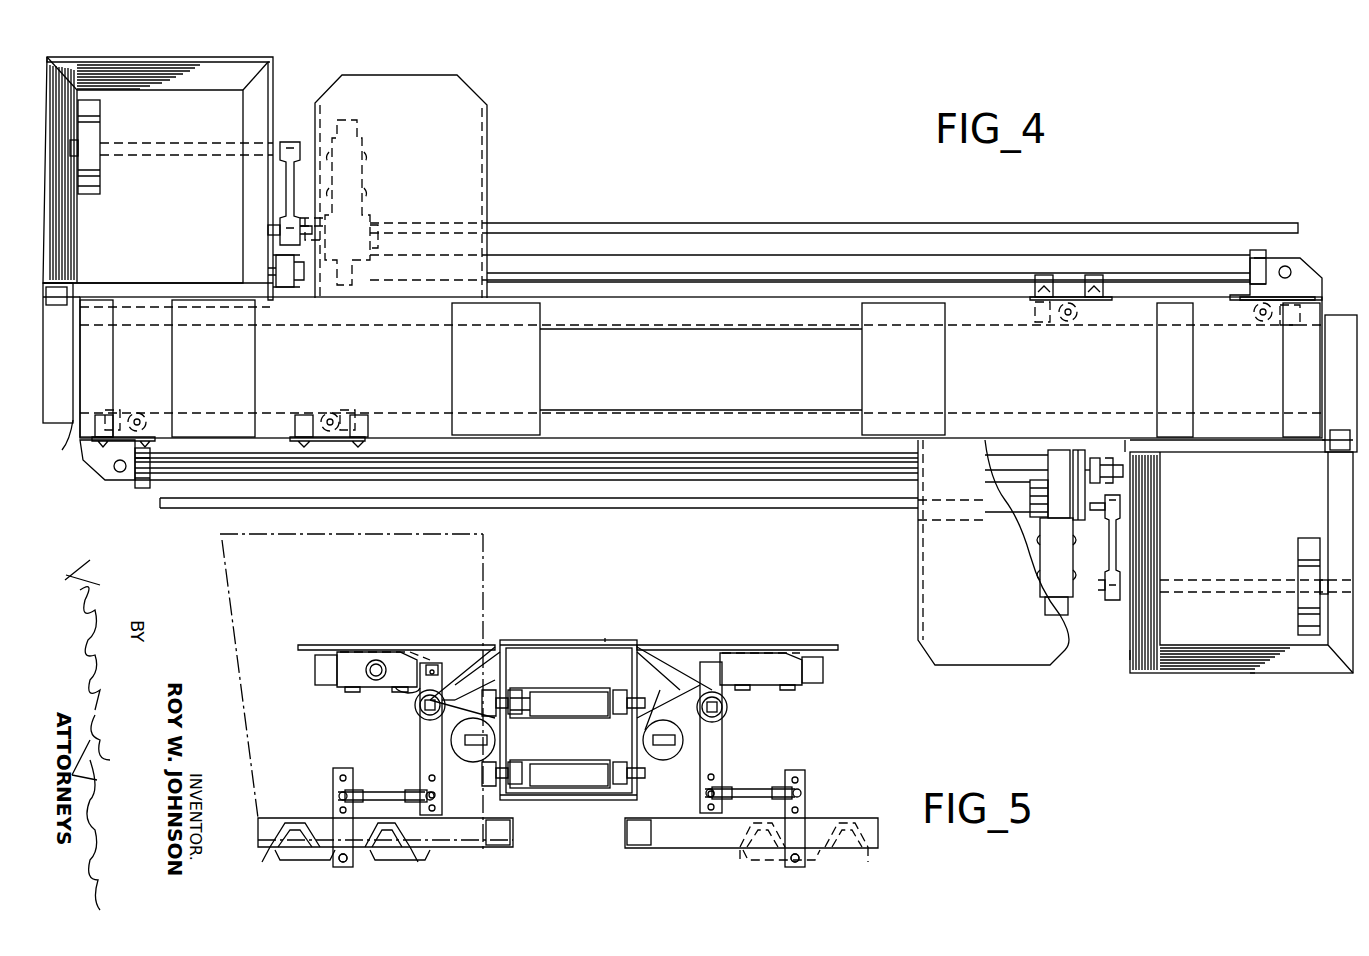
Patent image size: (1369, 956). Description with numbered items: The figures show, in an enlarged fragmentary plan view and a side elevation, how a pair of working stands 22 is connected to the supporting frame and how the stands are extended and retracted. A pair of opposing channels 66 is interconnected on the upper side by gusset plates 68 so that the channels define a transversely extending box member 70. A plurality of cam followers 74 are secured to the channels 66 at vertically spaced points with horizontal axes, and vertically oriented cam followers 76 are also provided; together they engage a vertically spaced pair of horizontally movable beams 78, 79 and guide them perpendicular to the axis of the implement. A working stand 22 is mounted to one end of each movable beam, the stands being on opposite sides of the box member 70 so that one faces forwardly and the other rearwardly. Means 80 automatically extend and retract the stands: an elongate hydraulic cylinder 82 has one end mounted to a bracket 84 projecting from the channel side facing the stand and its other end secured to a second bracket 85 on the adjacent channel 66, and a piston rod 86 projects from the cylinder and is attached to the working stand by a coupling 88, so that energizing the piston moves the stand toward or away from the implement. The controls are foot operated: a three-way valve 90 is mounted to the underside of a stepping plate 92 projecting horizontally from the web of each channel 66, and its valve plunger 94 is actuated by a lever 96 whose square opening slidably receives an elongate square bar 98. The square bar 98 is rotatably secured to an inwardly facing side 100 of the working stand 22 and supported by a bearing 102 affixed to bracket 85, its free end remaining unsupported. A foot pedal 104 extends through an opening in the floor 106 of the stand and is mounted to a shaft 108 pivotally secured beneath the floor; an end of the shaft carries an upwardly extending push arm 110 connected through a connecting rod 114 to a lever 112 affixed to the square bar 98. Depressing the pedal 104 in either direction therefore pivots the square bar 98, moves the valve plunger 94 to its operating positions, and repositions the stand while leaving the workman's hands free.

In FIG. 4, the working stand 22 is at (275, 66).
In FIG. 5, the working stand 22 is at (240, 635).
In FIG. 4, the channels 66 is at (676, 410).
In FIG. 5, the channels 66 is at (490, 655).
In FIG. 4, the gusset plates 68 is at (512, 374).
In FIG. 5, the gusset plates 68 is at (562, 640).
In FIG. 4, the box member 70 is at (736, 438).
In FIG. 5, the box member 70 is at (606, 640).
In FIG. 4, the cam followers 74 is at (352, 412).
In FIG. 5, the cam followers 74 is at (515, 700).
In FIG. 4, the cam followers 76 is at (330, 412).
In FIG. 4, the movable beam 78 is at (1325, 320).
In FIG. 5, the movable beam 78 is at (583, 690).
In FIG. 4, the movable beam 79 is at (84, 438).
In FIG. 5, the movable beam 79 is at (562, 760).
In FIG. 4, the means for extending and retracting the working stands 80 is at (615, 195).
In FIG. 4, the hydraulic cylinder 82 is at (972, 258).
In FIG. 5, the hydraulic cylinder 82 is at (463, 755).
In FIG. 4, the bracket 84 is at (1300, 266).
In FIG. 4, the second bracket 85 is at (1048, 450).
In FIG. 4, the piston rod 86 is at (1078, 450).
In FIG. 4, the coupling 88 is at (1112, 458).
In FIG. 4, the three-way valve 90 is at (362, 176).
In FIG. 5, the three-way valve 90 is at (340, 667).
In FIG. 4, the stepping plate 92 is at (470, 183).
In FIG. 5, the stepping plate 92 is at (380, 645).
In FIG. 5, the valve plunger 94 is at (412, 692).
In FIG. 5, the lever 96 is at (438, 676).
In FIG. 4, the square bar 98 is at (778, 223).
In FIG. 5, the square bar 98 is at (428, 722).
In FIG. 4, the inwardly facing side 100 is at (275, 116).
In FIG. 4, the bearing 102 is at (1072, 520).
In FIG. 5, the bearing 102 is at (415, 708).
In FIG. 4, the foot pedal 104 is at (100, 176).
In FIG. 5, the foot pedal 104 is at (296, 825).
In FIG. 4, the floor 106 is at (182, 236).
In FIG. 5, the floor 106 is at (440, 847).
In FIG. 4, the shaft 108 is at (178, 143).
In FIG. 5, the shaft 108 is at (343, 865).
In FIG. 5, the push arm 110 is at (333, 775).
In FIG. 5, the lever 112 is at (428, 752).
In FIG. 5, the connecting rod 114 is at (398, 790).